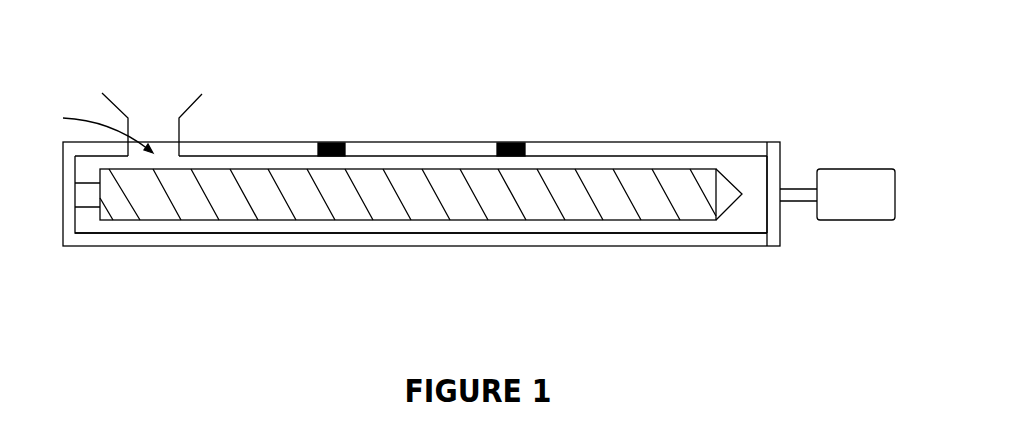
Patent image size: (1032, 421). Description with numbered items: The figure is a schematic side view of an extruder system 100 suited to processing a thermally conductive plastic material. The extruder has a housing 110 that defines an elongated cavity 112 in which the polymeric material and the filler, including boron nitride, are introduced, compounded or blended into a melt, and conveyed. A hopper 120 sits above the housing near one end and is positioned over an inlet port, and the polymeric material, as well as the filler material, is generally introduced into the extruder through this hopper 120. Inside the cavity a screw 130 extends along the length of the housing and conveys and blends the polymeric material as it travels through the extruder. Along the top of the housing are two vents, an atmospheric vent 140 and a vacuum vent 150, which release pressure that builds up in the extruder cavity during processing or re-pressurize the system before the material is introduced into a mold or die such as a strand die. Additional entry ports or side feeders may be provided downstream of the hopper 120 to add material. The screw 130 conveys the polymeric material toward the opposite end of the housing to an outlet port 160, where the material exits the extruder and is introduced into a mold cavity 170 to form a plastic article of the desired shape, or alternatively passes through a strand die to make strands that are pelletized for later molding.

The extruder system 100 is at (479, 180).
The housing 110 is at (383, 247).
The cavity 112 is at (294, 232).
The hopper 120 is at (181, 131).
The screw 130 is at (168, 221).
The atmospheric vent 140 is at (330, 142).
The vacuum vent 150 is at (510, 142).
The outlet port 160 is at (763, 195).
The mold cavity 170 is at (860, 168).